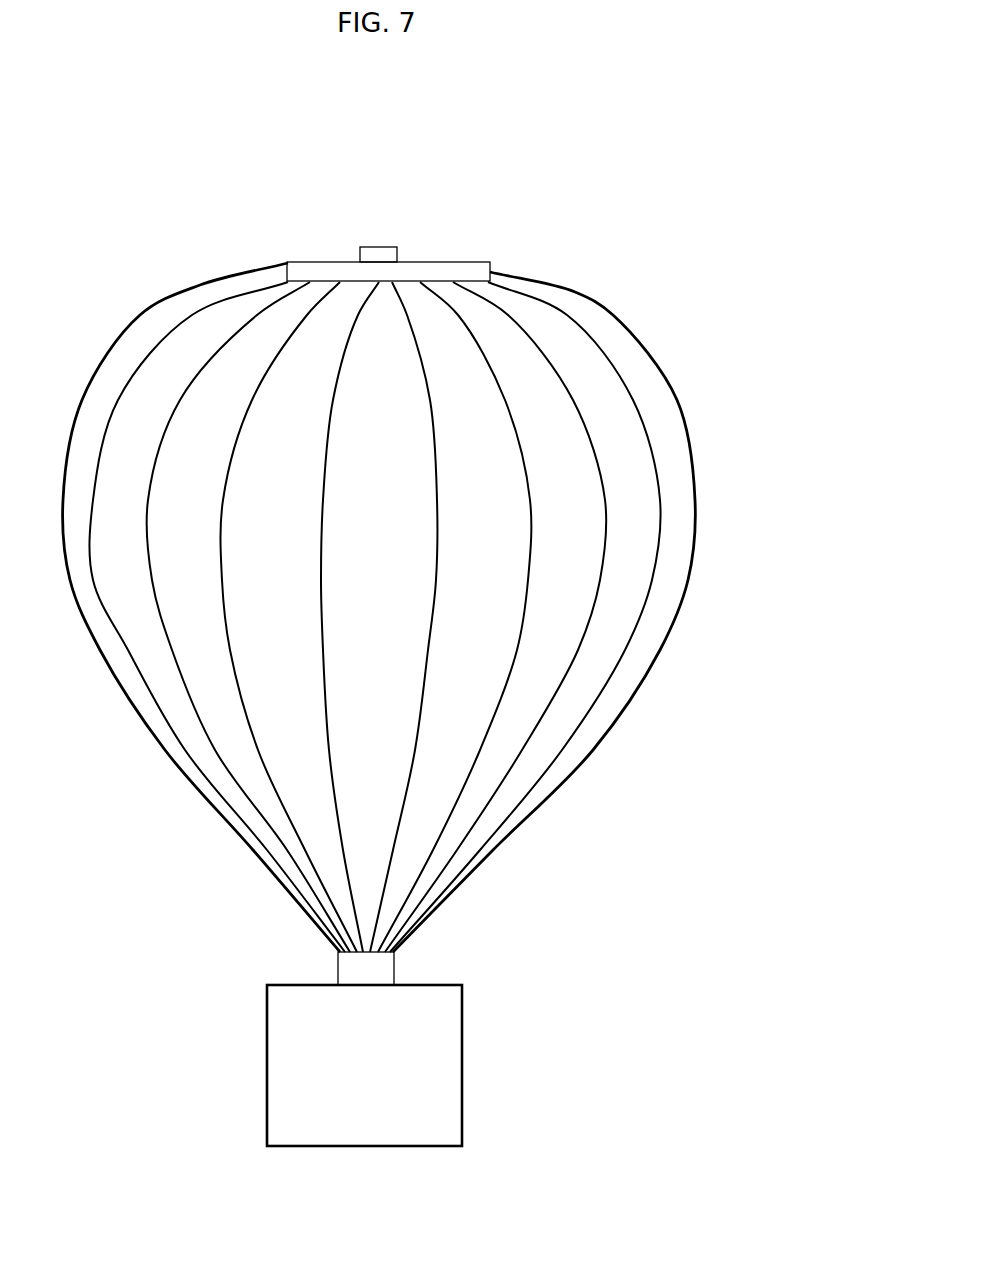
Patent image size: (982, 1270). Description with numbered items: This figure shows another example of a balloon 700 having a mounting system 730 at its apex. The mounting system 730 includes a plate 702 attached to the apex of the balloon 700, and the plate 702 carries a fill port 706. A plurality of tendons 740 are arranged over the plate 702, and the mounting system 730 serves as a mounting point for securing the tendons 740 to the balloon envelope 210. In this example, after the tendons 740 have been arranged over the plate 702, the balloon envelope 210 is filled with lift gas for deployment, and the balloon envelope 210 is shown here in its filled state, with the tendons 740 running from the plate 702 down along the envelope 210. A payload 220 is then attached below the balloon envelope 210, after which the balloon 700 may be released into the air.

The balloon 700 is at (836, 35).
The balloon envelope 210 is at (668, 672).
The payload 220 is at (462, 1065).
The plate 702 is at (478, 267).
The fill port 706 is at (380, 247).
The mounting system 730 is at (296, 252).
The tendons 740 is at (605, 505).